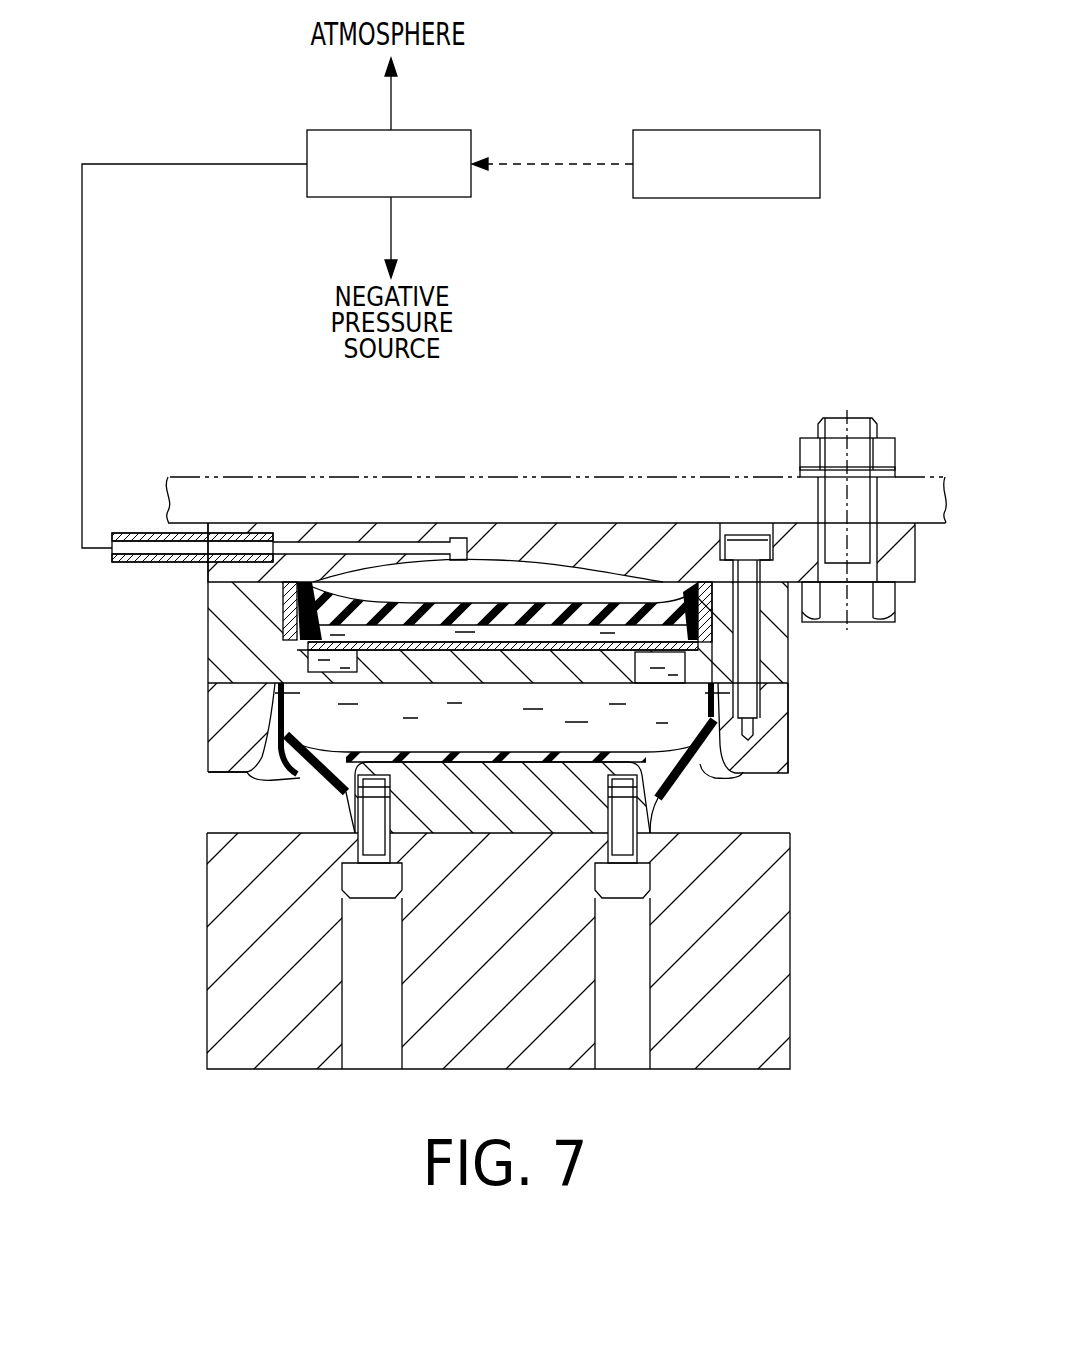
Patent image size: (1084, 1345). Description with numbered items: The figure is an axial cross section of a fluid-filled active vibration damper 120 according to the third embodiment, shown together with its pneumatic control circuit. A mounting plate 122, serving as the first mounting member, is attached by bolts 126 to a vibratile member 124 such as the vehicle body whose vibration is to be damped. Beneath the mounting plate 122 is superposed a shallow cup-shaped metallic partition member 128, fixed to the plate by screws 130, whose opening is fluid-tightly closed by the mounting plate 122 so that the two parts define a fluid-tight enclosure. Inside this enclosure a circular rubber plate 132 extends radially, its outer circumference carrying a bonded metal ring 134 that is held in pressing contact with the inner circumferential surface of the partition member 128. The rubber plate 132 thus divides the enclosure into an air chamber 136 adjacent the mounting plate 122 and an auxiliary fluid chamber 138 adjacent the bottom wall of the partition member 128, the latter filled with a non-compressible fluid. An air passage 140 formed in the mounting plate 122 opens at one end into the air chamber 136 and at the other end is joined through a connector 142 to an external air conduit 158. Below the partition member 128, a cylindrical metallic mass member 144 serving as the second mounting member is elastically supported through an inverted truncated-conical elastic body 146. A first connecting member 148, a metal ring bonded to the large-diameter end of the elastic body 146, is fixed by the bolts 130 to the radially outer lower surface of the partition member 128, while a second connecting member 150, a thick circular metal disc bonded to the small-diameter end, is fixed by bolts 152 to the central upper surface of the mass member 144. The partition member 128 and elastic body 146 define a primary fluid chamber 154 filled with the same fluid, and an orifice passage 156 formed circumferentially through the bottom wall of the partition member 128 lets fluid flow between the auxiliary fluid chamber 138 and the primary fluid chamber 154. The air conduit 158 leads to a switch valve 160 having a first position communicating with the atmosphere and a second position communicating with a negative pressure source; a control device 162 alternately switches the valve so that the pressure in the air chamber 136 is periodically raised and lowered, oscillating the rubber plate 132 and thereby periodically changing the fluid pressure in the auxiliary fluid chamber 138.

The active vibration damper 120 is at (176, 705).
The mounting plate 122 is at (674, 537).
The vibratile member 124 is at (346, 495).
The bolts 126 is at (887, 600).
The partition member 128 is at (236, 650).
The screws 130 is at (751, 545).
The rubber plate 132 is at (520, 606).
The metal ring 134 is at (282, 616).
The air chamber 136 is at (490, 565).
The auxiliary fluid chamber 138 is at (576, 645).
The air passage 140 is at (302, 548).
The connector 142 is at (155, 538).
The mass member 144 is at (285, 1048).
The elastic body 146 is at (337, 780).
The first connecting member 148 is at (778, 735).
The second connecting member 150 is at (498, 803).
The bolts 152 is at (362, 878).
The primary fluid chamber 154 is at (282, 697).
The orifice passage 156 is at (667, 662).
The external air conduit 158 is at (102, 367).
The switch valve 160 is at (432, 142).
The control device 162 is at (770, 140).